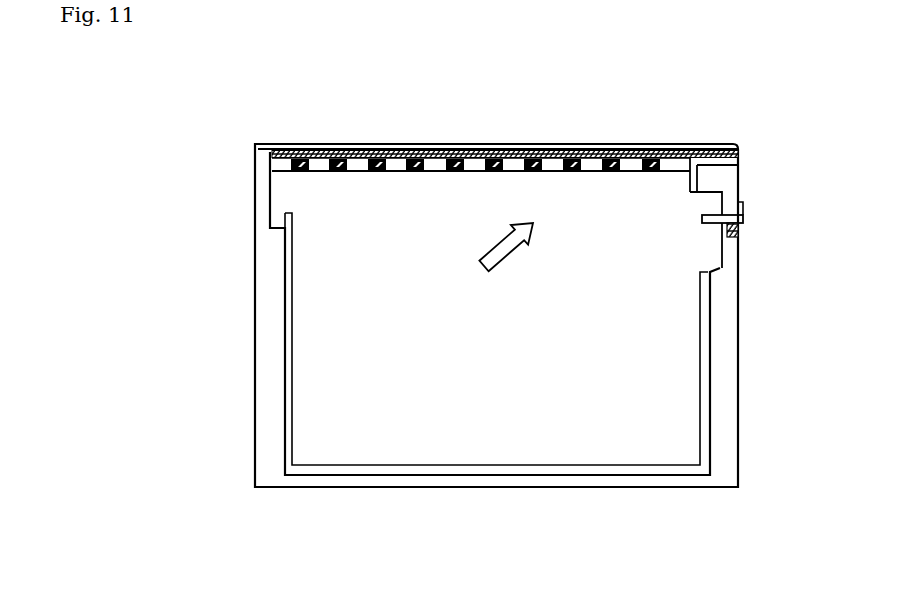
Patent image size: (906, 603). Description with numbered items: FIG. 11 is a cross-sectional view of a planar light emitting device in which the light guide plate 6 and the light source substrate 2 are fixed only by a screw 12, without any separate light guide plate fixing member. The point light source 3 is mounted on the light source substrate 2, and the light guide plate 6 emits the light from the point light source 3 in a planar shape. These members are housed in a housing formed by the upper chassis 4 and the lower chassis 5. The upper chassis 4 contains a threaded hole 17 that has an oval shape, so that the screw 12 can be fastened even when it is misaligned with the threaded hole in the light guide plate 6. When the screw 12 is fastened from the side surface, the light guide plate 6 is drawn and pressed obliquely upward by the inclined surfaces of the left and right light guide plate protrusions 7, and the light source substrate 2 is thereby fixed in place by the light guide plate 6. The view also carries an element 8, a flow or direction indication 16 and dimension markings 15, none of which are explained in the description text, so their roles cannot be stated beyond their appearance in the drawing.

The light source substrate 2 is at (740, 153).
The point light source 3 is at (527, 160).
The upper chassis 4 is at (720, 178).
The lower chassis 5 is at (395, 147).
The light guide plate 6 is at (666, 355).
The light guide plate protrusion 7 is at (279, 192).
The bracket 8 is at (682, 160).
The screw 12 is at (746, 218).
The wall thickness 15 is at (320, 428).
The flow direction arrow 16 is at (525, 252).
The threaded hole 17 is at (729, 236).